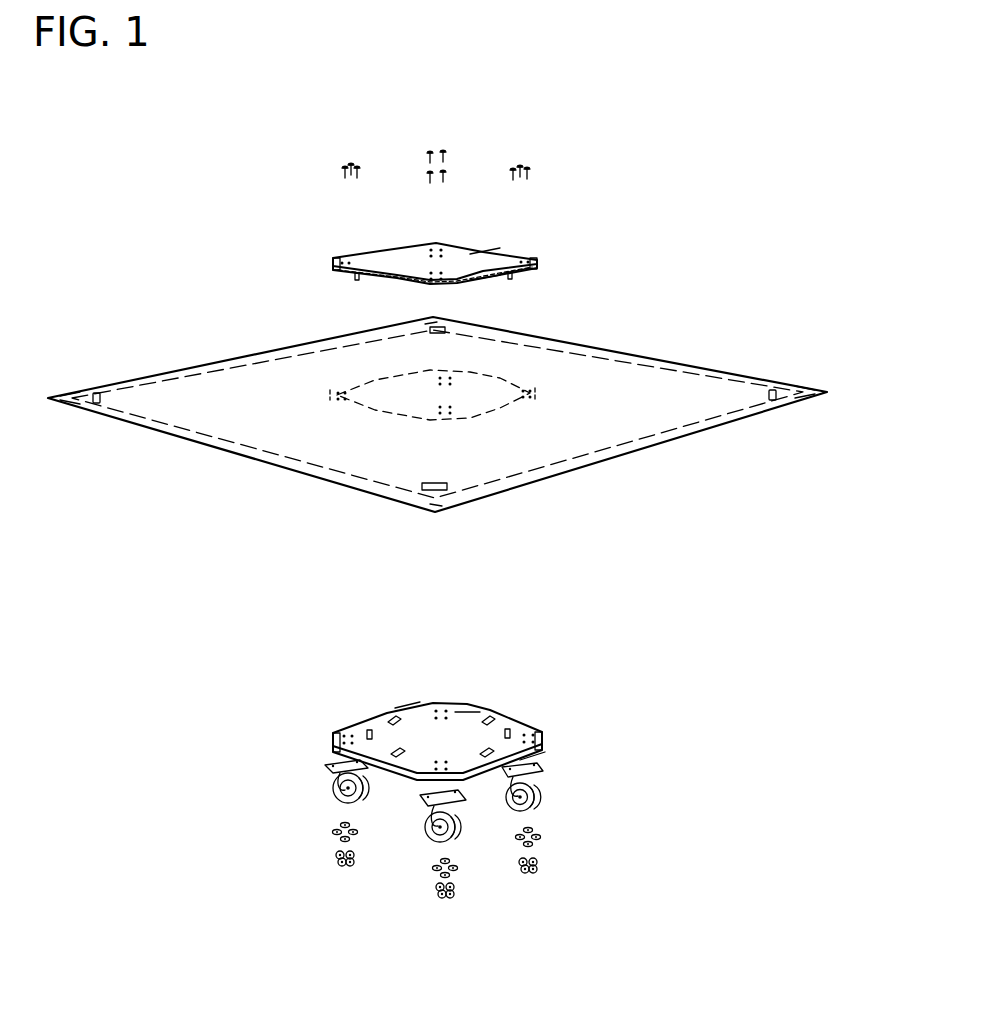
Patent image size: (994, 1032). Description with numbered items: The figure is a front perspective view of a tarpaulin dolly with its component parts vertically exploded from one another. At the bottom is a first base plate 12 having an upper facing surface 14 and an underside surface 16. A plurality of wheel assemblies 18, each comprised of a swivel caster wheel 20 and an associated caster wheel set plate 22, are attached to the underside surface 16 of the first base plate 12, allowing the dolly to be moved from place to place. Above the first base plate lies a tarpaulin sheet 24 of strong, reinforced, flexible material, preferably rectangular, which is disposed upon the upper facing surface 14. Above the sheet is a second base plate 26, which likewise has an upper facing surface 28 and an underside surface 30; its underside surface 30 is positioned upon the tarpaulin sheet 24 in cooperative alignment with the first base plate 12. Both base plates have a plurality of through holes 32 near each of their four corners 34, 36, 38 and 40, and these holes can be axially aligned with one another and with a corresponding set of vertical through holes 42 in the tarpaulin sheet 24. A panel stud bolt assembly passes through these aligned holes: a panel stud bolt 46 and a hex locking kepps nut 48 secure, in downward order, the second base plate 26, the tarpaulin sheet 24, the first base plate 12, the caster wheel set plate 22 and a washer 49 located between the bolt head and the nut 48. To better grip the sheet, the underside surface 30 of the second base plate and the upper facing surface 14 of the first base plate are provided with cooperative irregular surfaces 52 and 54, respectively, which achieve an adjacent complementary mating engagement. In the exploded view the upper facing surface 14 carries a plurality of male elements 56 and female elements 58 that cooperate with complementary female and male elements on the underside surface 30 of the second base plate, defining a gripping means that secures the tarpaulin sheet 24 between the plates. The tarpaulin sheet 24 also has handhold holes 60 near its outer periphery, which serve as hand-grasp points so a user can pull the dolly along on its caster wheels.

The first base plate 12 is at (347, 723).
The upper facing surface 14 is at (470, 712).
The underside surface 16 is at (550, 757).
The wheel assemblies 18 is at (440, 815).
The swivel caster wheel 20 is at (330, 792).
The caster wheel set plate 22 is at (330, 762).
The tarpaulin sheet 24 is at (563, 425).
The second base plate 26 is at (367, 250).
The upper facing surface 28 is at (487, 257).
The underside surface 30 is at (543, 278).
The through holes 32 is at (435, 243).
The corner 34 is at (437, 243).
The corner 36 is at (427, 287).
The corner 38 is at (335, 260).
The corner 40 is at (537, 258).
The vertical through holes 42 is at (337, 390).
The panel stud bolt 46 is at (362, 157).
The hex locking kepps nut 48 is at (338, 868).
The washer 49 is at (332, 835).
The irregular surface 52 is at (490, 279).
The irregular surface 54 is at (407, 706).
The male elements 56 is at (510, 277).
The female elements 58 is at (397, 717).
The handhold holes 60 is at (95, 397).